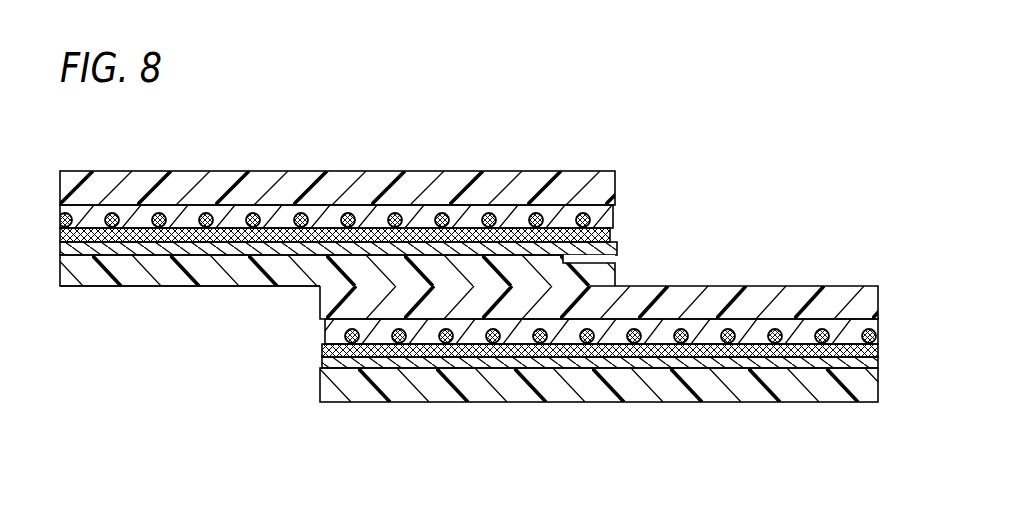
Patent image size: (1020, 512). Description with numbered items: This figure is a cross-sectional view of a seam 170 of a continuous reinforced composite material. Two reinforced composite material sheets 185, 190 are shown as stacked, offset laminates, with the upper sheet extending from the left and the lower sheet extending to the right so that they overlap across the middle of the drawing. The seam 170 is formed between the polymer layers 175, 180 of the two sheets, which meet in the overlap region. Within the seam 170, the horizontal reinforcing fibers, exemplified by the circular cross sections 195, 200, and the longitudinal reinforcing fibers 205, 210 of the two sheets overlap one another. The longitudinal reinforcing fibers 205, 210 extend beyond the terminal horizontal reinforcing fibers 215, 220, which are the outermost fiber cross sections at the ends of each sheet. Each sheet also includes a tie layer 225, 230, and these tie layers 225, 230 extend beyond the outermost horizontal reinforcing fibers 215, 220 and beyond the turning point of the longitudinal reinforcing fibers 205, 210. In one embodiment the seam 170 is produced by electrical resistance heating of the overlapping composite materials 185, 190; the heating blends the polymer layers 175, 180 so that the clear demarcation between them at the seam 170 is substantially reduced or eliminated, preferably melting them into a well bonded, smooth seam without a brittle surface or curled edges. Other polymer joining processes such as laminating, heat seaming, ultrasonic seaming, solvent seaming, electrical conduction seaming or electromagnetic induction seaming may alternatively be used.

The seam 170 is at (615, 267).
The polymer layer 175 is at (110, 288).
The polymer layer 180 is at (560, 354).
The reinforced composite material sheet 185 is at (371, 224).
The reinforced composite material sheet 190 is at (688, 409).
The horizontal reinforcing fibers 195 is at (442, 214).
The horizontal reinforcing fibers 200 is at (587, 343).
The longitudinal reinforcing fibers 205 is at (607, 238).
The longitudinal reinforcing fibers 210 is at (323, 352).
The terminal horizontal reinforcing fiber 215 is at (582, 213).
The terminal horizontal reinforcing fiber 220 is at (352, 343).
The tie layer 225 is at (371, 161).
The tie layer 230 is at (560, 388).